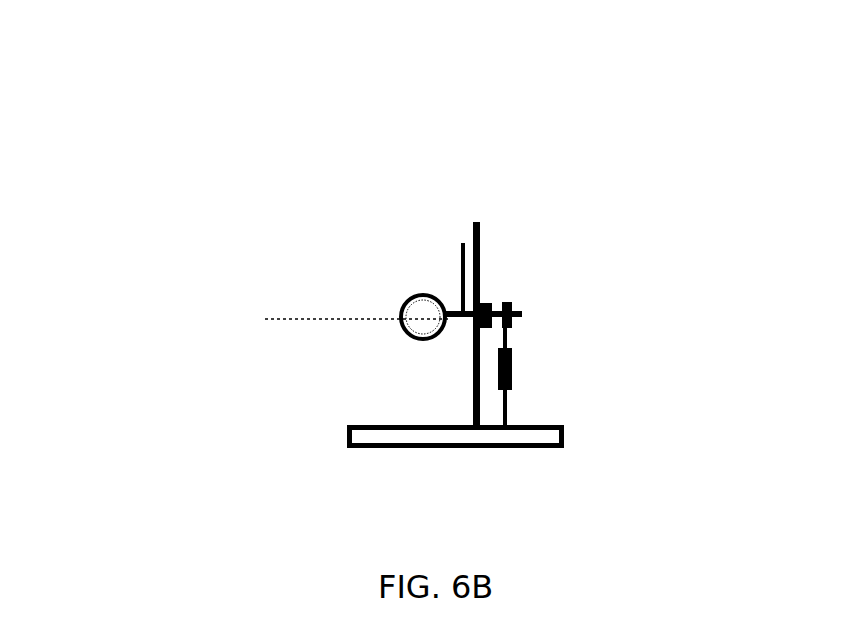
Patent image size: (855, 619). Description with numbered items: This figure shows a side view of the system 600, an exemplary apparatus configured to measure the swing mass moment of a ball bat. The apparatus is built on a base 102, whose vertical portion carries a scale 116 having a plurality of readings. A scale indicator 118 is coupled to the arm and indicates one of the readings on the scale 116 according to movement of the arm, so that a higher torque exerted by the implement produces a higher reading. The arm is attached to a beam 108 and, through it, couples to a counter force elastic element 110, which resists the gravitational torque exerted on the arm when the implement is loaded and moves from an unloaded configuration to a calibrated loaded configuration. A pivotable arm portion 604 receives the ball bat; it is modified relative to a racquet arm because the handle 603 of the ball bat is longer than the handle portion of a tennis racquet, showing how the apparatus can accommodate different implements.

The system 600 is at (238, 86).
The base 102 is at (565, 458).
The scale 116 is at (463, 217).
The scale indicator 118 is at (443, 263).
The beam 108 is at (521, 295).
The counter force elastic element 110 is at (531, 370).
The handle 603 is at (386, 293).
The pivotable arm portion 604 is at (458, 356).